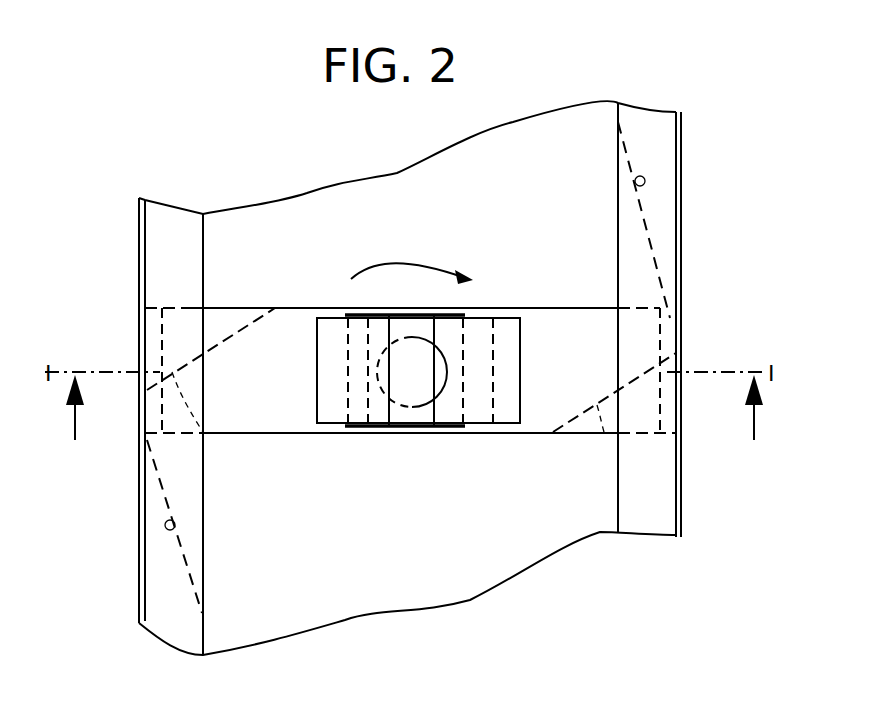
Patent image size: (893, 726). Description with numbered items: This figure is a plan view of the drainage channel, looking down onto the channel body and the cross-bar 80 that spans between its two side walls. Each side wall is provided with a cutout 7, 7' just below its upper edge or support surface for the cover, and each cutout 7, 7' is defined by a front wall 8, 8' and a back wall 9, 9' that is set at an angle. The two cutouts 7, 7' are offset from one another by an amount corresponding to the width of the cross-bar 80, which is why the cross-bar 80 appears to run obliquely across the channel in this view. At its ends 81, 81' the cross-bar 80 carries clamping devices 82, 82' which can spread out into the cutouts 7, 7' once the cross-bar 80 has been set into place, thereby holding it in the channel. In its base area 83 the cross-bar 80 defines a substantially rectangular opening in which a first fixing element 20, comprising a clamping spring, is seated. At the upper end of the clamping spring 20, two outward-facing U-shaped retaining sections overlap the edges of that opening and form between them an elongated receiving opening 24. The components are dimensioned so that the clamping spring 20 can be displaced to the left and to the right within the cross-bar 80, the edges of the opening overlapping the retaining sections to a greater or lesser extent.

The cutout 7 is at (212, 434).
The cutout 7' is at (597, 317).
The front wall 8 is at (190, 349).
The front wall 8' is at (632, 410).
The back wall 9 is at (144, 526).
The back wall 9' is at (668, 220).
The first fixing element 20 is at (530, 422).
The receiving opening 24 is at (420, 418).
The cross-bar 80 is at (543, 297).
The end of cross-bar 81 is at (173, 335).
The end of cross-bar 81' is at (643, 336).
The clamping device 82 is at (209, 421).
The clamping device 82' is at (598, 440).
The base area 83 is at (287, 413).